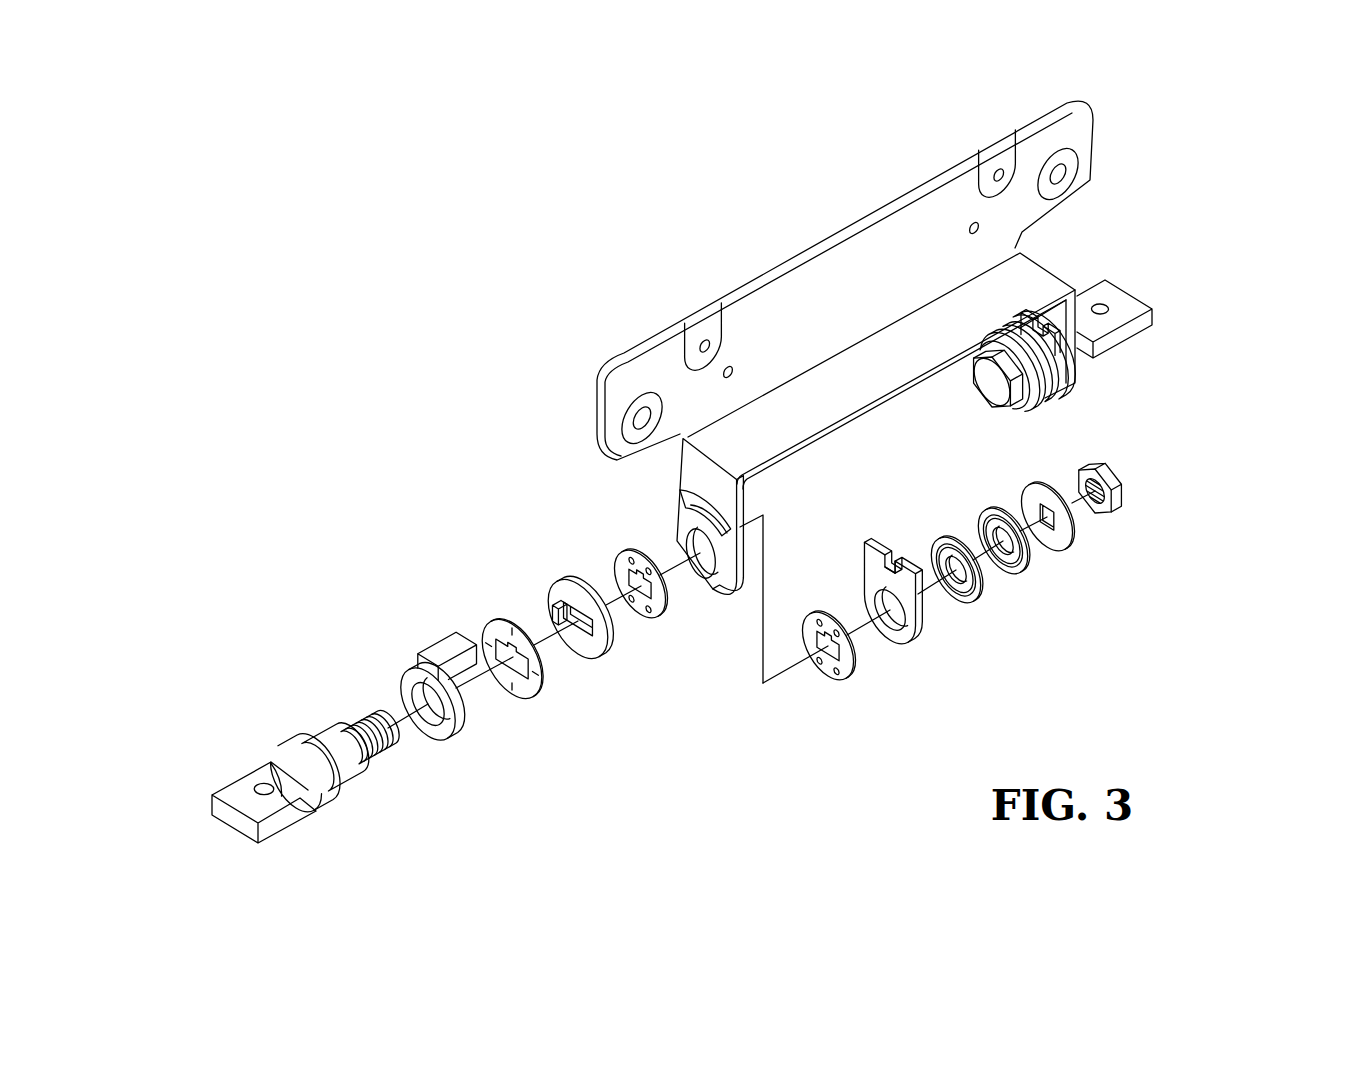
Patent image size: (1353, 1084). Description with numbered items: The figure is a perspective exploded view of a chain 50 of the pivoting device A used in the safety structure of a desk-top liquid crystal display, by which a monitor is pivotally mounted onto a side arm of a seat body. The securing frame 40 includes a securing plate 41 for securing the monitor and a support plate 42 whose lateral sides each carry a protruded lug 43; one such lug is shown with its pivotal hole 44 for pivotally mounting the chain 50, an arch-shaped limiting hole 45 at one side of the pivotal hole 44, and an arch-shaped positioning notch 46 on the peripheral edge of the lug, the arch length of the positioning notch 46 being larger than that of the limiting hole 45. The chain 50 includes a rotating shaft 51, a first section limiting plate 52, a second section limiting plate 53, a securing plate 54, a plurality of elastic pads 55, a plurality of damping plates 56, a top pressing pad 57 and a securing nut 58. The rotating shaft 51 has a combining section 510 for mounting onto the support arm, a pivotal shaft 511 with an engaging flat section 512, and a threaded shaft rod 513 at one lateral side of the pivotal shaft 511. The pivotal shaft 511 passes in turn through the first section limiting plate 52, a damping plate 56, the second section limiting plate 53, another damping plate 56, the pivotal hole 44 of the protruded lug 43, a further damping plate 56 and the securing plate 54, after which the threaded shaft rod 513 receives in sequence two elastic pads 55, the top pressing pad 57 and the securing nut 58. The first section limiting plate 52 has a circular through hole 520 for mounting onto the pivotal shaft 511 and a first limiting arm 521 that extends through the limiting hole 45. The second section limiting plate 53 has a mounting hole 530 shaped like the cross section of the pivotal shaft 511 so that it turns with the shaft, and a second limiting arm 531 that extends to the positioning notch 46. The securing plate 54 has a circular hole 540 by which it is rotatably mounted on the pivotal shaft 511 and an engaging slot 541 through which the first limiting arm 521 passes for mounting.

The pivoting device A is at (482, 293).
The securing frame 40 is at (810, 197).
The securing plate 41 is at (813, 275).
The support plate 42 is at (1028, 275).
The protruded lug 43 is at (687, 469).
The pivotal hole 44 is at (701, 553).
The arch-shaped limiting hole 45 is at (705, 513).
The arch-shaped positioning notch 46 is at (728, 583).
The chain 50 is at (1148, 287).
The rotating shaft 51 is at (281, 730).
The combining section 510 is at (247, 783).
The pivotal shaft 511 is at (335, 756).
The engaging flat section 512 is at (305, 773).
The threaded shaft rod 513 is at (322, 750).
The first section limiting plate 52 is at (402, 688).
The circular through hole 520 is at (431, 702).
The first limiting arm 521 is at (450, 642).
The second section limiting plate 53 is at (607, 643).
The mounting hole 530 is at (578, 619).
The second limiting arm 531 is at (577, 627).
The securing plate 54 is at (910, 636).
The circular hole 540 is at (891, 609).
The engaging slot 541 is at (890, 564).
The elastic pads 55 is at (977, 594).
The damping plates 56 is at (503, 617).
The top pressing pad 57 is at (1067, 540).
The securing nut 58 is at (1117, 503).